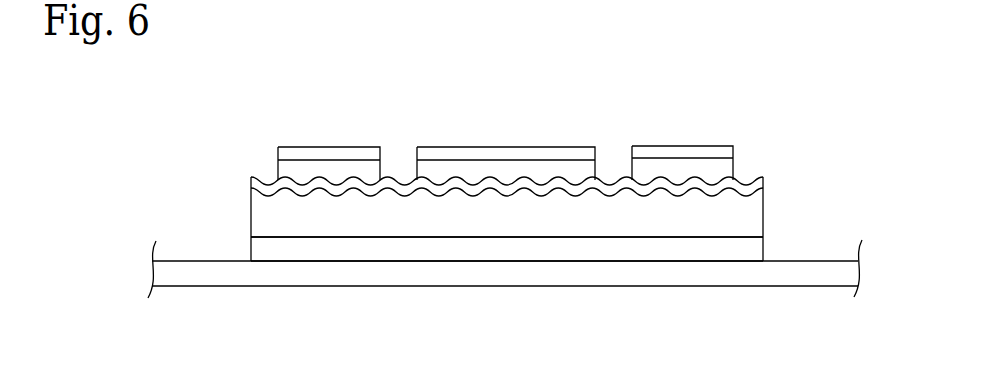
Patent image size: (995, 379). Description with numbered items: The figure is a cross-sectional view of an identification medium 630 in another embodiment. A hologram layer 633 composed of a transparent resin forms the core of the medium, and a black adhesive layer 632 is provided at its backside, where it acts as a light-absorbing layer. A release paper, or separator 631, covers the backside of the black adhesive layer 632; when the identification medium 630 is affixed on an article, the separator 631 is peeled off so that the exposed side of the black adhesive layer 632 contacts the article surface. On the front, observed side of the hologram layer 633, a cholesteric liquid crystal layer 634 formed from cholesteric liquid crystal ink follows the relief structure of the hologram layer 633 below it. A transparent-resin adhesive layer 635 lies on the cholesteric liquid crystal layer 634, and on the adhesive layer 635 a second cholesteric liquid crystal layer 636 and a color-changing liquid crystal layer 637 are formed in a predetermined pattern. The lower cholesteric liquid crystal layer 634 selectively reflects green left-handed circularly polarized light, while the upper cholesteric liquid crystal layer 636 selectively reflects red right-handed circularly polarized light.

The identification medium 630 is at (776, 203).
The release paper (separator) 631 is at (610, 273).
The black adhesive layer 632 is at (700, 248).
The hologram layer 633 is at (265, 213).
The cholesteric liquid crystal layer 634 is at (390, 185).
The adhesive layer 635 is at (305, 173).
The cholesteric liquid crystal layer 636 is at (357, 155).
The color-changing liquid crystal layer 637 is at (477, 157).